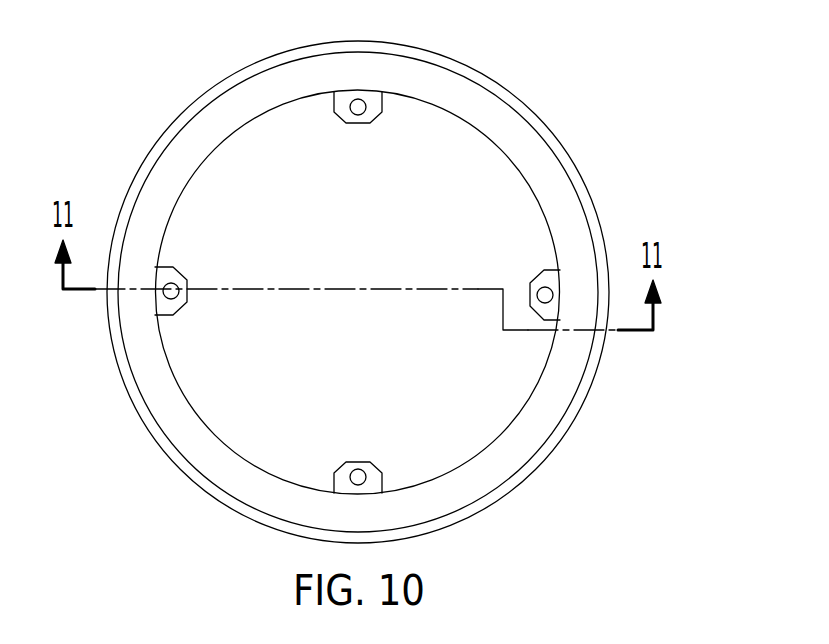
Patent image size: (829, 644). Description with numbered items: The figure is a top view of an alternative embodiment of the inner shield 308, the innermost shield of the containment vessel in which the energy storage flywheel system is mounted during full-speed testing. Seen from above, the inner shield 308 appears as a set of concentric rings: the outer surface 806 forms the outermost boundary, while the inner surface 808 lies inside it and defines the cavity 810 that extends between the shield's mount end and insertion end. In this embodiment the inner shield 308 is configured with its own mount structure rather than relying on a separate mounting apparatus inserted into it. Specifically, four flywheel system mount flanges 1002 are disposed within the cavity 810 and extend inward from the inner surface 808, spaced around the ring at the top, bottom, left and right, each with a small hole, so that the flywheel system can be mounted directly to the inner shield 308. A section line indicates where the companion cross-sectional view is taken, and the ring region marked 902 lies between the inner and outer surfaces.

The inner shield 308 is at (630, 113).
The outer surface 806 is at (588, 184).
The inner surface 808 is at (181, 188).
The cavity 810 is at (388, 247).
The rim flange 902 is at (489, 101).
The flywheel system mount flange 1002 is at (363, 123).